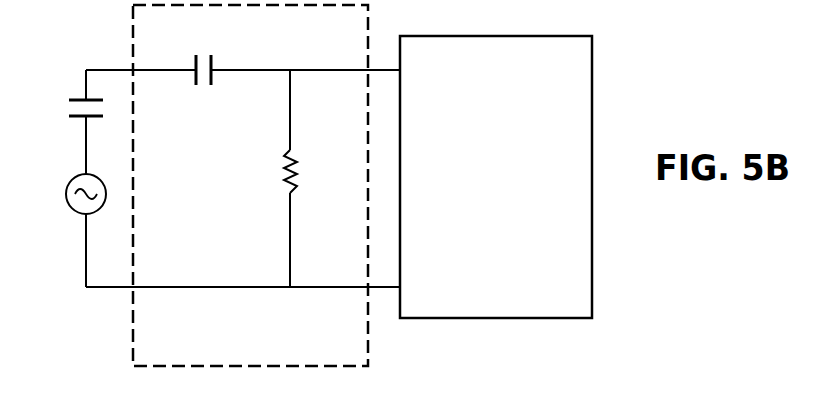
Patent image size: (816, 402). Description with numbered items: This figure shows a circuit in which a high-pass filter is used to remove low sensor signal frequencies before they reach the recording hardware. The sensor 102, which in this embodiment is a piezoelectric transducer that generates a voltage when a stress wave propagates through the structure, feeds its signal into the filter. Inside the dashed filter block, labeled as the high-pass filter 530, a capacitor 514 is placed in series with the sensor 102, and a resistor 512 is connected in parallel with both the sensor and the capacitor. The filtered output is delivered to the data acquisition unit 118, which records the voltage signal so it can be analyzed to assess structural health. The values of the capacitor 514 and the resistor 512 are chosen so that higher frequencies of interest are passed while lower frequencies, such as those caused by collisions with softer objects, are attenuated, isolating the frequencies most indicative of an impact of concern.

The sensor 102 is at (59, 178).
The capacitor 514 is at (202, 86).
The resistor 512 is at (300, 181).
The high-pass filter 530 is at (250, 186).
The data acquisition unit 118 is at (519, 303).